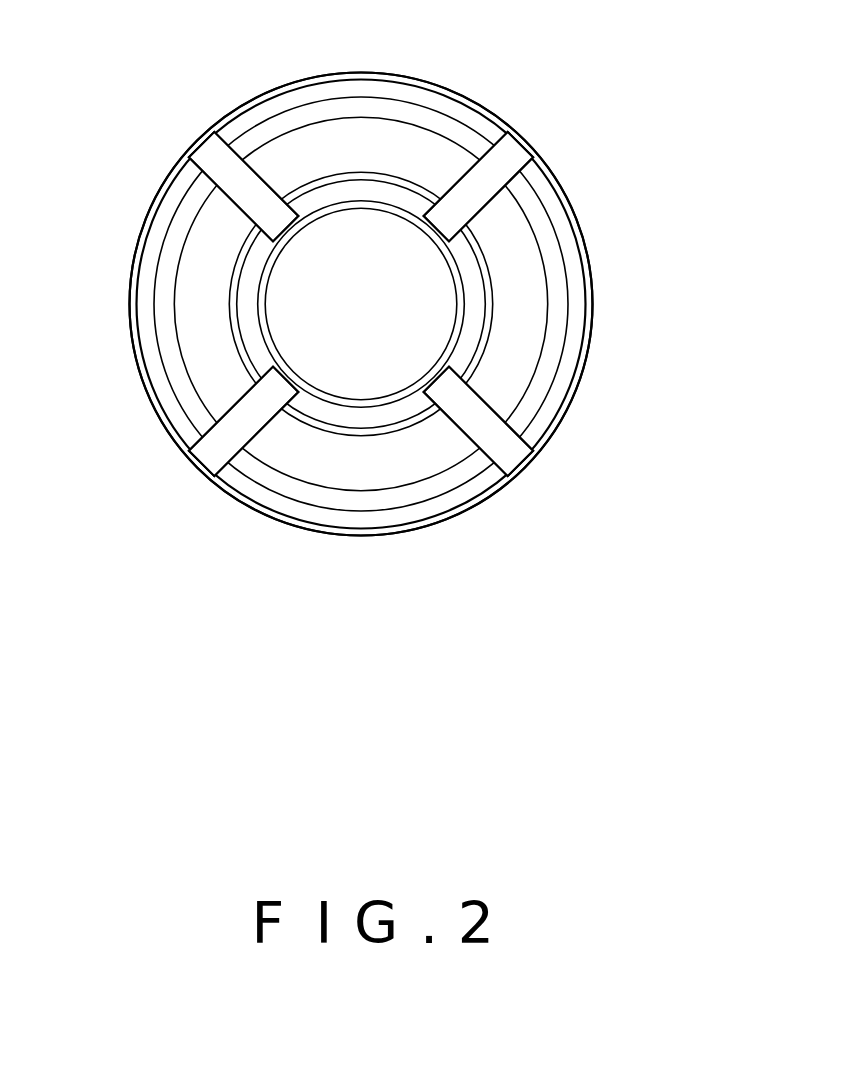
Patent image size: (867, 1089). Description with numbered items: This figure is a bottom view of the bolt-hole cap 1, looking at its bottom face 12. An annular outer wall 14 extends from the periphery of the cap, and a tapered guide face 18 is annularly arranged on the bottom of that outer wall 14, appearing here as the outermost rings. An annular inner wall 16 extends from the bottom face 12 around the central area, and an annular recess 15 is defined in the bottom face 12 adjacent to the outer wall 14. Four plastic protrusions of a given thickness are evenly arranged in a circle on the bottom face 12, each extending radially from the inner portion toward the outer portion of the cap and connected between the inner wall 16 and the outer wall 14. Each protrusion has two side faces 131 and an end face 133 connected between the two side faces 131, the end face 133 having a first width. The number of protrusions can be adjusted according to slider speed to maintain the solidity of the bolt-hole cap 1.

The bolt-hole cap 1 is at (455, 59).
The bottom face 12 is at (490, 252).
The annular outer wall 14 is at (568, 351).
The annular recess 15 is at (548, 292).
The annular inner wall 16 is at (470, 335).
The guide face 18 is at (558, 428).
The side faces 131 is at (242, 160).
The end face 133 is at (225, 176).